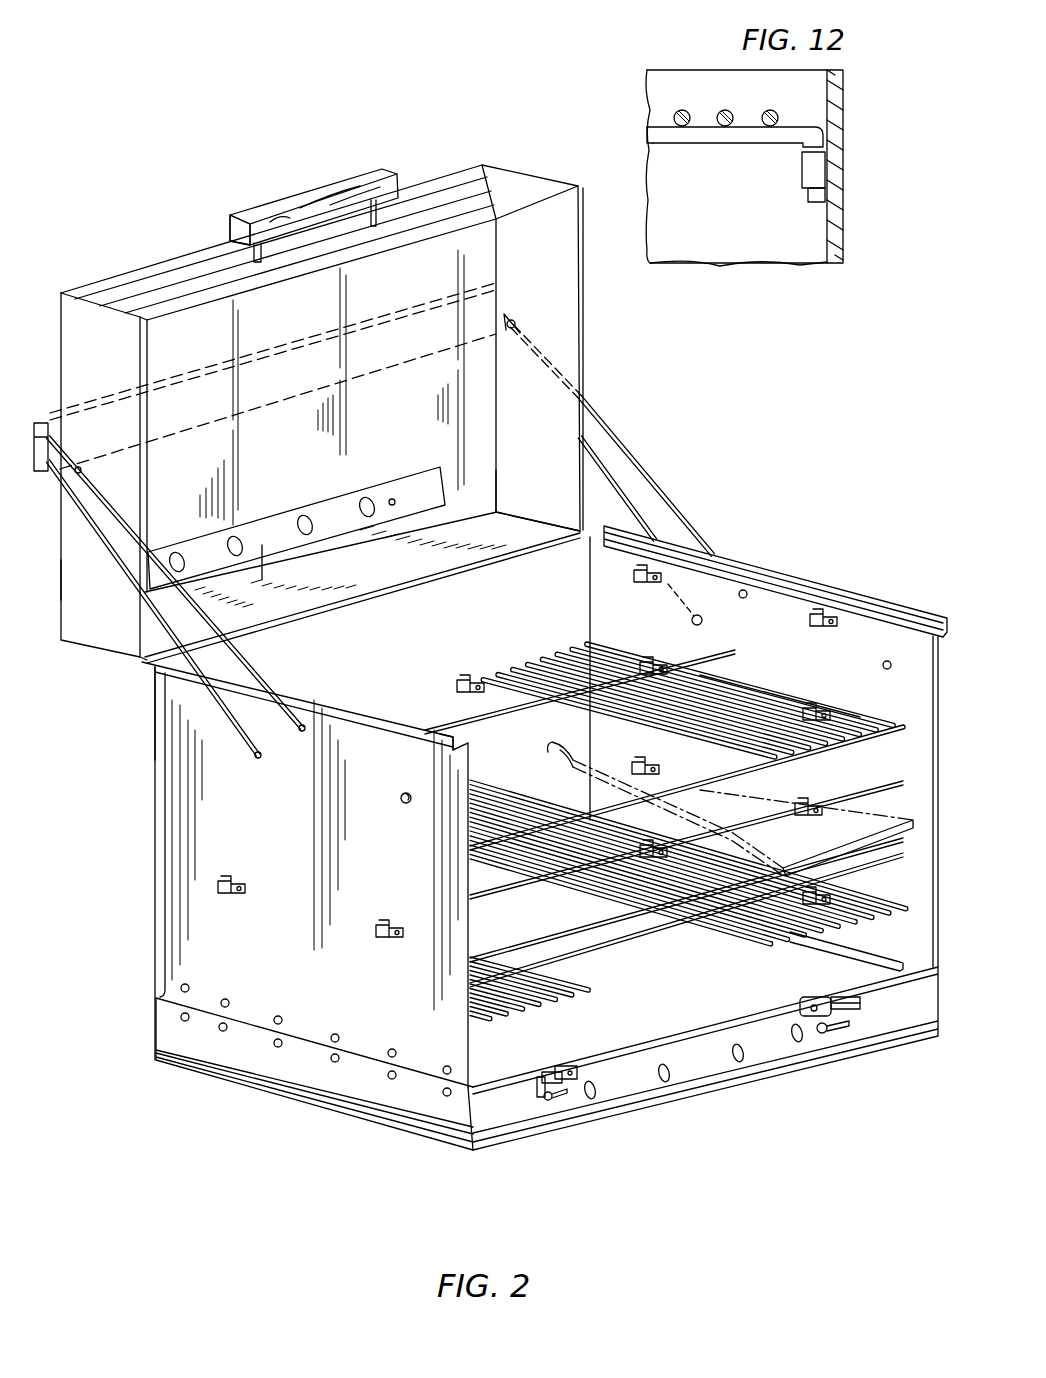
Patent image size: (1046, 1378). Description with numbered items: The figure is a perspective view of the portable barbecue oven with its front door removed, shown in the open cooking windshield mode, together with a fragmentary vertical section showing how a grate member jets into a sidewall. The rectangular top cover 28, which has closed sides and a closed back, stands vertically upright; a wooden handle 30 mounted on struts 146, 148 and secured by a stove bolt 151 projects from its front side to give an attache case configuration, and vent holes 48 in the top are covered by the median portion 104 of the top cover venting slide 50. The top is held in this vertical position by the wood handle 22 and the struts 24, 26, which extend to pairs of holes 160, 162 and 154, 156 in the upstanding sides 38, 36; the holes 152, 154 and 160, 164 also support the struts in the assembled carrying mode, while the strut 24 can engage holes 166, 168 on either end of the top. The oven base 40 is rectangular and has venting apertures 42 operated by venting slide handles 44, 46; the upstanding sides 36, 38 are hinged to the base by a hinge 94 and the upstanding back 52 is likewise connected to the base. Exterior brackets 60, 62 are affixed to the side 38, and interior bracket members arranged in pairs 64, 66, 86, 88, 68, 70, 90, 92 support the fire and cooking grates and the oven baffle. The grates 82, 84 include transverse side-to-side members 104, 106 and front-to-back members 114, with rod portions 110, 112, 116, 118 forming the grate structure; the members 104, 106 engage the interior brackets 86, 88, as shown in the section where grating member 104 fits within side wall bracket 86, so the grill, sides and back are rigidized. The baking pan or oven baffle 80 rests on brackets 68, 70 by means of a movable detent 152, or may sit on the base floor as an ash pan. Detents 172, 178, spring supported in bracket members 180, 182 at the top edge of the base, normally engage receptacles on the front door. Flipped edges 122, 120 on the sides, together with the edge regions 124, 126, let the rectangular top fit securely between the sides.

In FIG. 2, the wood handle 22 is at (47, 422).
In FIG. 2, the strut 24 is at (648, 475).
In FIG. 2, the strut 26 is at (660, 500).
In FIG. 2, the rectangular top cover 28 is at (528, 168).
In FIG. 2, the wooden handle 30 is at (304, 196).
In FIG. 2, the upstanding side 36 is at (764, 752).
In FIG. 12, the upstanding side 36 is at (840, 130).
In FIG. 2, the upstanding side 38 is at (306, 948).
In FIG. 2, the oven base 40 is at (303, 1082).
In FIG. 2, the venting apertures 42 is at (660, 1083).
In FIG. 2, the venting slide handle 44 is at (549, 1100).
In FIG. 2, the venting slide handle 46 is at (824, 1035).
In FIG. 2, the vent holes 48 is at (312, 528).
In FIG. 2, the top cover venting slide 50 is at (418, 490).
In FIG. 2, the upstanding back 52 is at (346, 652).
In FIG. 2, the exterior bracket 60 is at (250, 880).
In FIG. 2, the exterior bracket 62 is at (405, 945).
In FIG. 2, the interior bracket member 64 is at (685, 570).
In FIG. 2, the interior bracket member 66 is at (848, 622).
In FIG. 2, the interior bracket member 68 is at (650, 757).
In FIG. 2, the interior bracket member 70 is at (815, 800).
In FIG. 2, the baking pan or oven baffle 80 is at (860, 822).
In FIG. 2, the grate 82 is at (776, 690).
In FIG. 12, the grate 82 is at (700, 127).
In FIG. 2, the grate 84 is at (870, 905).
In FIG. 2, the interior bracket 86 is at (833, 708).
In FIG. 12, the interior bracket 86 is at (813, 172).
In FIG. 2, the interior bracket 88 is at (640, 660).
In FIG. 2, the interior bracket member 90 is at (830, 892).
In FIG. 2, the interior bracket member 92 is at (668, 846).
In FIG. 2, the hinge 94 is at (872, 952).
In FIG. 2, the transverse member 104 is at (264, 540).
In FIG. 12, the transverse member 104 is at (725, 145).
In FIG. 2, the transverse member 106 is at (440, 722).
In FIG. 2, the support rod 110 is at (866, 747).
In FIG. 2, the upper grate 112 is at (745, 668).
In FIG. 2, the front to back member 114 is at (463, 673).
In FIG. 2, the support rod 116 is at (513, 886).
In FIG. 2, the support rod 118 is at (646, 932).
In FIG. 2, the flipped edge 120 is at (442, 738).
In FIG. 2, the flipped edge 122 is at (812, 590).
In FIG. 2, the lid bottom edge 124 is at (580, 505).
In FIG. 2, the corner flange 126 is at (143, 666).
In FIG. 2, the strut 146 is at (246, 246).
In FIG. 2, the strut 148 is at (378, 214).
In FIG. 2, the stove bolt 151 is at (84, 579).
In FIG. 2, the movable detent / hole 152 is at (882, 665).
In FIG. 2, the hole 154 is at (690, 616).
In FIG. 2, the hole 156 is at (746, 599).
In FIG. 2, the hole 160 is at (252, 770).
In FIG. 2, the hole 162 is at (301, 745).
In FIG. 2, the hole 164 is at (410, 805).
In FIG. 2, the hole 166 is at (520, 325).
In FIG. 2, the hole 168 is at (82, 470).
In FIG. 2, the detent 172 is at (541, 1076).
In FIG. 2, the detent 178 is at (861, 1004).
In FIG. 2, the bracket member 180 is at (580, 1068).
In FIG. 2, the bracket member 182 is at (808, 998).